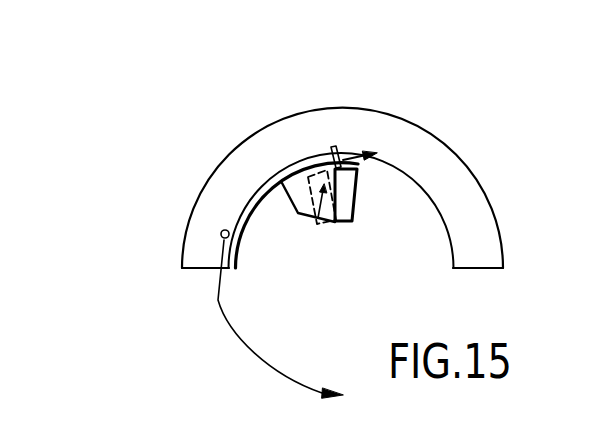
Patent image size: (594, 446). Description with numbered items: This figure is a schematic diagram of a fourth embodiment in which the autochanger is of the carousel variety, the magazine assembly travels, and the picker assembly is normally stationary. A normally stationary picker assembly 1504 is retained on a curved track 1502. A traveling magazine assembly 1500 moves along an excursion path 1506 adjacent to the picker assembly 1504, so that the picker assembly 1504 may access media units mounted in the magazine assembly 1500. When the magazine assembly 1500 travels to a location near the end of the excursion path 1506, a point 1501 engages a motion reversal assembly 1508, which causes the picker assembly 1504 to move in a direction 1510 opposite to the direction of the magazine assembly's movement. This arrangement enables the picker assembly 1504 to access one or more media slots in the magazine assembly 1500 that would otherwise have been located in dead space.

The traveling magazine assembly 1500 is at (443, 152).
The point 1501 is at (223, 230).
The curved track 1502 is at (298, 213).
The normally stationary picker assembly 1504 is at (355, 187).
The excursion path 1506 is at (219, 306).
The motion reversal assembly 1508 is at (333, 148).
The direction 1510 is at (330, 223).